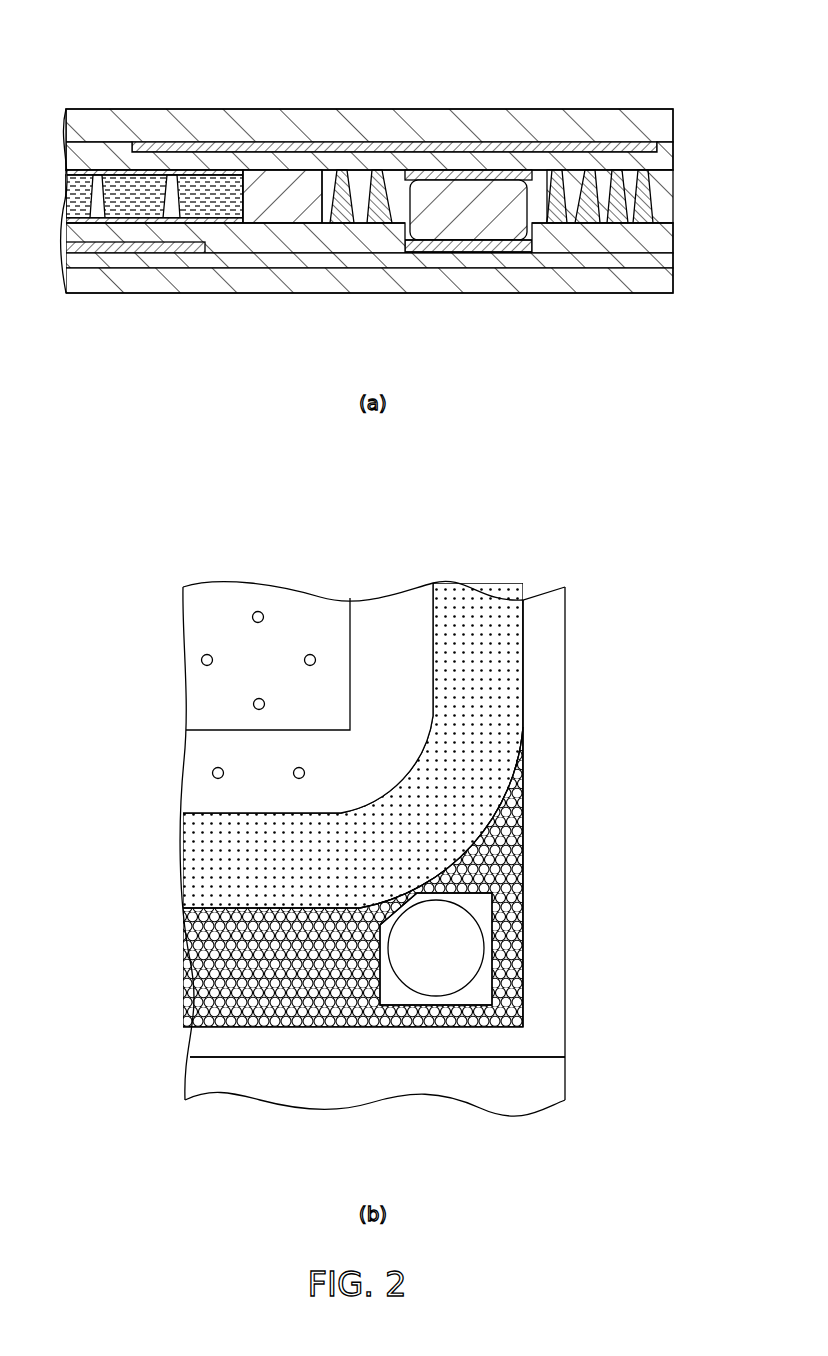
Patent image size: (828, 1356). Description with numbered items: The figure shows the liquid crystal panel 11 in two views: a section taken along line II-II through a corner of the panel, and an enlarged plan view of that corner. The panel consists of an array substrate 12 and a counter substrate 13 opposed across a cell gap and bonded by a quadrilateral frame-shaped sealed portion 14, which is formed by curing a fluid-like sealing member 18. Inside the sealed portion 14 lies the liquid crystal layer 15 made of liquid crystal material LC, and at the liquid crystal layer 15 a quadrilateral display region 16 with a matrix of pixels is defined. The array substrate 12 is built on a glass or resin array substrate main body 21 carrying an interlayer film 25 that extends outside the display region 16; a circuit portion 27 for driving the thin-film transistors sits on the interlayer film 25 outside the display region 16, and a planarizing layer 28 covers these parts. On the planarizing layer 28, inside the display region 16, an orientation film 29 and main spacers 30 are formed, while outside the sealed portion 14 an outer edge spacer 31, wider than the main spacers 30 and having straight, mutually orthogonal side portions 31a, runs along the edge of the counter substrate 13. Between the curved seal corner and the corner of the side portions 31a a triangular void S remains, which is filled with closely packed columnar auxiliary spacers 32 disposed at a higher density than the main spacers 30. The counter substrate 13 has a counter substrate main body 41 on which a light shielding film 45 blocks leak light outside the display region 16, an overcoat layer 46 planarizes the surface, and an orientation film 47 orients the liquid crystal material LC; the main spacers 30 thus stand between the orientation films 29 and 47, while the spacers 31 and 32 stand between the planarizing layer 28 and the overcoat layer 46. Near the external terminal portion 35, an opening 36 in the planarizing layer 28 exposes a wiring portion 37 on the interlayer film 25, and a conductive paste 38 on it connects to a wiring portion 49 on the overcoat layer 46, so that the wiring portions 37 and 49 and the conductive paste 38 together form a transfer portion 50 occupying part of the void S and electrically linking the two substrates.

The liquid crystal panel 11 is at (532, 55).
The array substrate 12 is at (676, 223).
The counter substrate 13 is at (676, 109).
The sealed portion 14 is at (307, 177).
The liquid crystal layer 15 is at (197, 177).
The display region 16 is at (243, 66).
The sealing member 18 is at (283, 217).
The array substrate main body 21 is at (590, 287).
The interlayer film 25 is at (622, 262).
The circuit portion 27 is at (165, 253).
The planarizing layer 28 is at (653, 232).
The orientation film 29 is at (227, 223).
The main spacers 30 is at (97, 180).
The outer edge spacer 31 is at (663, 186).
The side portions 31a is at (557, 741).
The auxiliary spacers 32 is at (380, 177).
The external terminal portion 35 is at (315, 1100).
The opening 36 is at (413, 224).
The wiring portion 37 is at (462, 240).
The conductive paste 38 is at (490, 203).
The counter substrate main body 41 is at (533, 118).
The light shielding film 45 is at (577, 148).
The overcoat layer 46 is at (122, 147).
The orientation film 47 is at (142, 170).
The wiring portion 49 is at (427, 157).
The transfer portion 50 is at (478, 168).
The liquid crystal material LC is at (128, 210).
The voids S is at (640, 177).
The section line II- II is at (178, 676).